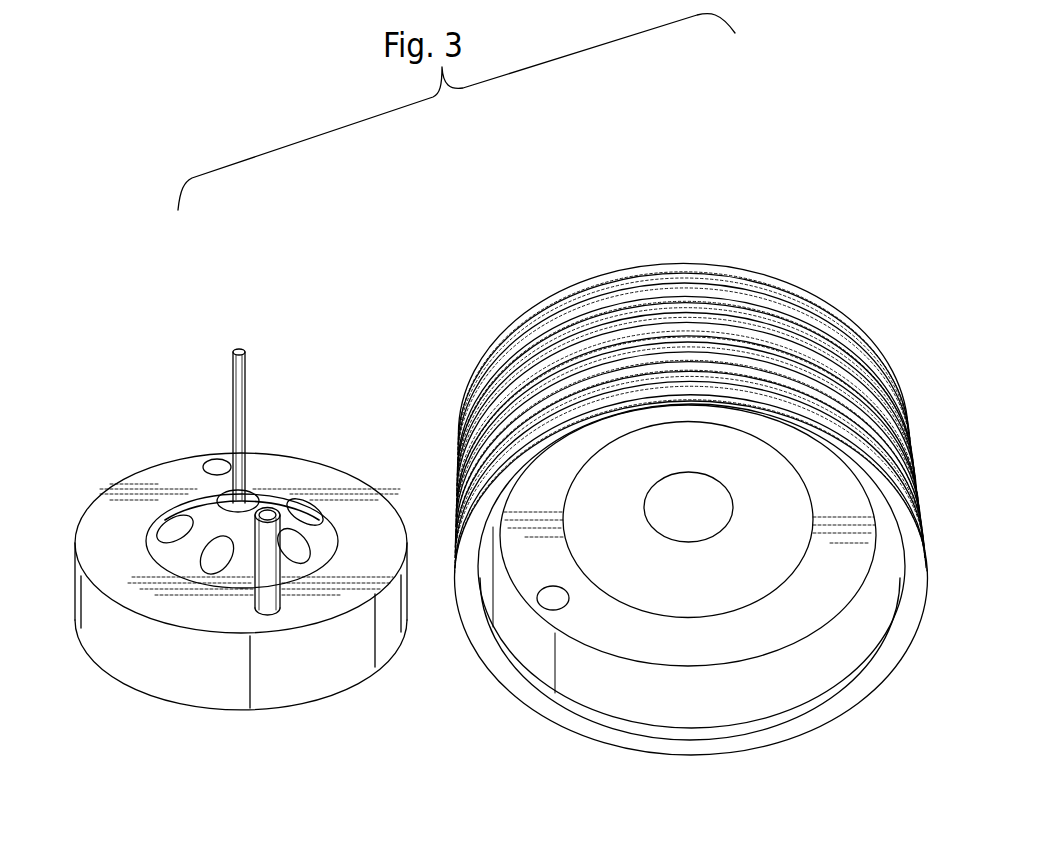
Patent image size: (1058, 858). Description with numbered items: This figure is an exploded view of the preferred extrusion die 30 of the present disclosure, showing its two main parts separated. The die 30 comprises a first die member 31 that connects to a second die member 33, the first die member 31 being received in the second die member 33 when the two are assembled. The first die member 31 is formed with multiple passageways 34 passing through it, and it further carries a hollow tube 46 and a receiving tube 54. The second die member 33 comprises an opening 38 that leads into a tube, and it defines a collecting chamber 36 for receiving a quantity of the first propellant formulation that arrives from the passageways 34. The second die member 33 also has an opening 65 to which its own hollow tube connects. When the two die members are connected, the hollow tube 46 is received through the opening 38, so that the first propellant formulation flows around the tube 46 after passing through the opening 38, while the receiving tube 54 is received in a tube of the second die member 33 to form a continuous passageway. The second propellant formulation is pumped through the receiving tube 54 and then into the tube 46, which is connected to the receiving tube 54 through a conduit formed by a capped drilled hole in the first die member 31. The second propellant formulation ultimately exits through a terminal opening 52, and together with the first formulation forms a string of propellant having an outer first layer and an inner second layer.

The extrusion die 30 is at (420, 276).
The first die member 31 is at (110, 530).
The second die member 33 is at (773, 305).
The passageways 34 is at (158, 538).
The collecting chamber 36 is at (782, 562).
The opening 38 is at (684, 520).
The hollow tube 46 is at (246, 375).
The terminal opening 52 is at (238, 350).
The receiving tube 54 is at (265, 597).
The opening 65 is at (563, 604).